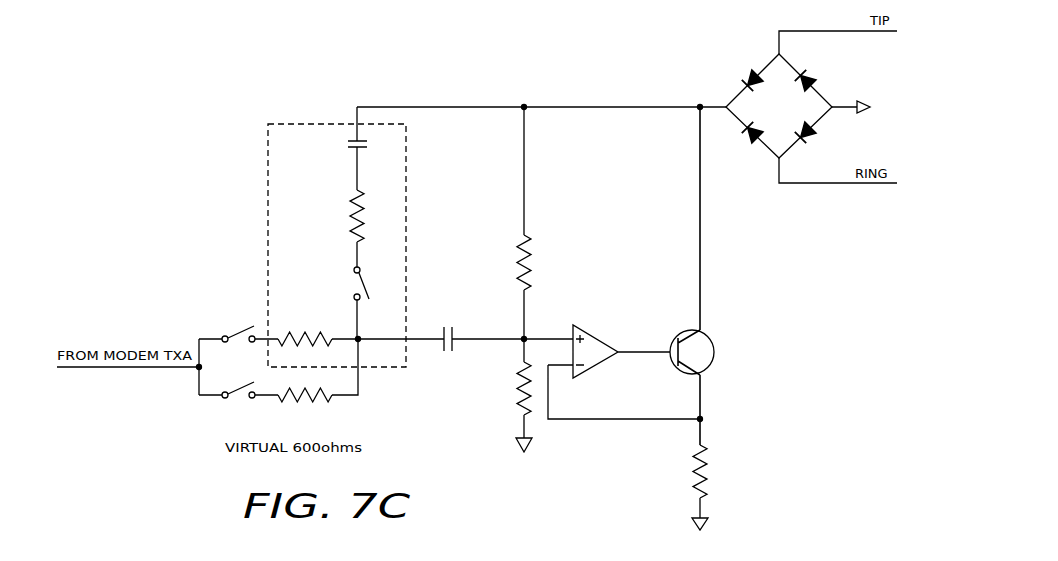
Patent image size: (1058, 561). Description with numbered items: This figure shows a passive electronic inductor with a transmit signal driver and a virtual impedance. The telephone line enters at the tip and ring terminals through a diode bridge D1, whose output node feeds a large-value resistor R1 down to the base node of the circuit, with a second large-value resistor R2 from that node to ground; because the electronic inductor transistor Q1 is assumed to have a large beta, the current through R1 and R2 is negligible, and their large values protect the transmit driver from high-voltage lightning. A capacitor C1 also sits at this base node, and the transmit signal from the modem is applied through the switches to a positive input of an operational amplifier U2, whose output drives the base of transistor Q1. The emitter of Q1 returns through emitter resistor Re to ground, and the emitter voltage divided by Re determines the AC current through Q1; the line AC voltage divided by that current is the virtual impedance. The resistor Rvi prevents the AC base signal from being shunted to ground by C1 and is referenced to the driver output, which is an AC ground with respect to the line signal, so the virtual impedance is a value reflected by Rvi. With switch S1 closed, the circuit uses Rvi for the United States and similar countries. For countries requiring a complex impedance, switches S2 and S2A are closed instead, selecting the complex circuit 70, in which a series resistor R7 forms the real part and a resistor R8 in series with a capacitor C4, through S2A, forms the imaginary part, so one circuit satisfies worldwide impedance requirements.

The complex circuit 70 is at (312, 72).
The switch S1 is at (238, 399).
The switch S2 is at (238, 343).
The switch S2A is at (376, 303).
The resistor Rvi is at (318, 380).
The series resistor R7 is at (361, 349).
The resistor R8 is at (370, 228).
The capacitor C4 is at (369, 148).
The capacitor C1 is at (506, 350).
The resistor R1 is at (537, 223).
The resistor R2 is at (511, 395).
The operational amplifier U2 is at (624, 368).
The transistor Q1 is at (702, 276).
The emitter resistor Re is at (713, 487).
The diode bridge D1 is at (811, 107).